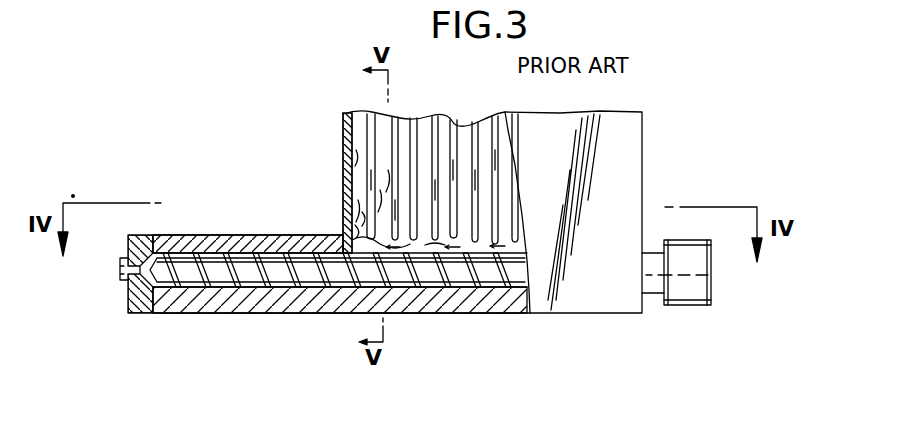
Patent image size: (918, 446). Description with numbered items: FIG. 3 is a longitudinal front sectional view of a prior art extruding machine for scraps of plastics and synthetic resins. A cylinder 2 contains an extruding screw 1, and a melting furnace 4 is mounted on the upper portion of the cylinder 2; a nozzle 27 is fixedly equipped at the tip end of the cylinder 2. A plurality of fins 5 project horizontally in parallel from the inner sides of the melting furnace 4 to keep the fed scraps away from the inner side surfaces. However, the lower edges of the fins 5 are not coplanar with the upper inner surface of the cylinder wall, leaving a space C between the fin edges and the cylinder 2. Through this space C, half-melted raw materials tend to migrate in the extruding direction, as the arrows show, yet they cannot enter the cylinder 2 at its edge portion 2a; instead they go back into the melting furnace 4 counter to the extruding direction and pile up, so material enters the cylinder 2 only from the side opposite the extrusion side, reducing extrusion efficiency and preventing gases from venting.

The extruding screw 1 is at (238, 264).
The cylinder 2 is at (200, 237).
The edge portion of the cylinder 2a is at (347, 250).
The melting furnace 4 is at (343, 136).
The fins 5 is at (416, 113).
The nozzle 27 is at (120, 270).
The space C is at (346, 238).